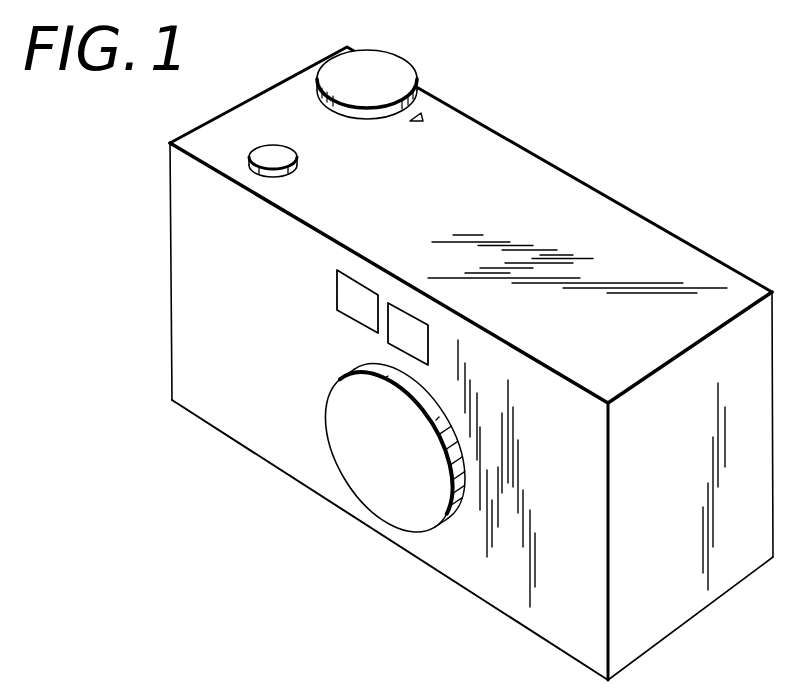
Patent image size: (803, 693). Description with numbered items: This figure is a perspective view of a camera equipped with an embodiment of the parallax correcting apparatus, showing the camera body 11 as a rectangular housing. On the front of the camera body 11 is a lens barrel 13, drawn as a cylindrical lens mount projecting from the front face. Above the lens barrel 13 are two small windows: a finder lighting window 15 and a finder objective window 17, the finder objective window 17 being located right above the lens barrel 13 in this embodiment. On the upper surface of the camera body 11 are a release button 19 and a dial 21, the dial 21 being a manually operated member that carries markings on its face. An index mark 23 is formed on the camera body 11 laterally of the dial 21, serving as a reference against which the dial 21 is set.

The camera body 11 is at (471, 363).
The lens barrel 13 is at (462, 507).
The finder lighting window 15 is at (358, 298).
The finder objective window 17 is at (410, 325).
The release button 19 is at (273, 147).
The dial 21 is at (376, 65).
The index mark 23 is at (436, 85).